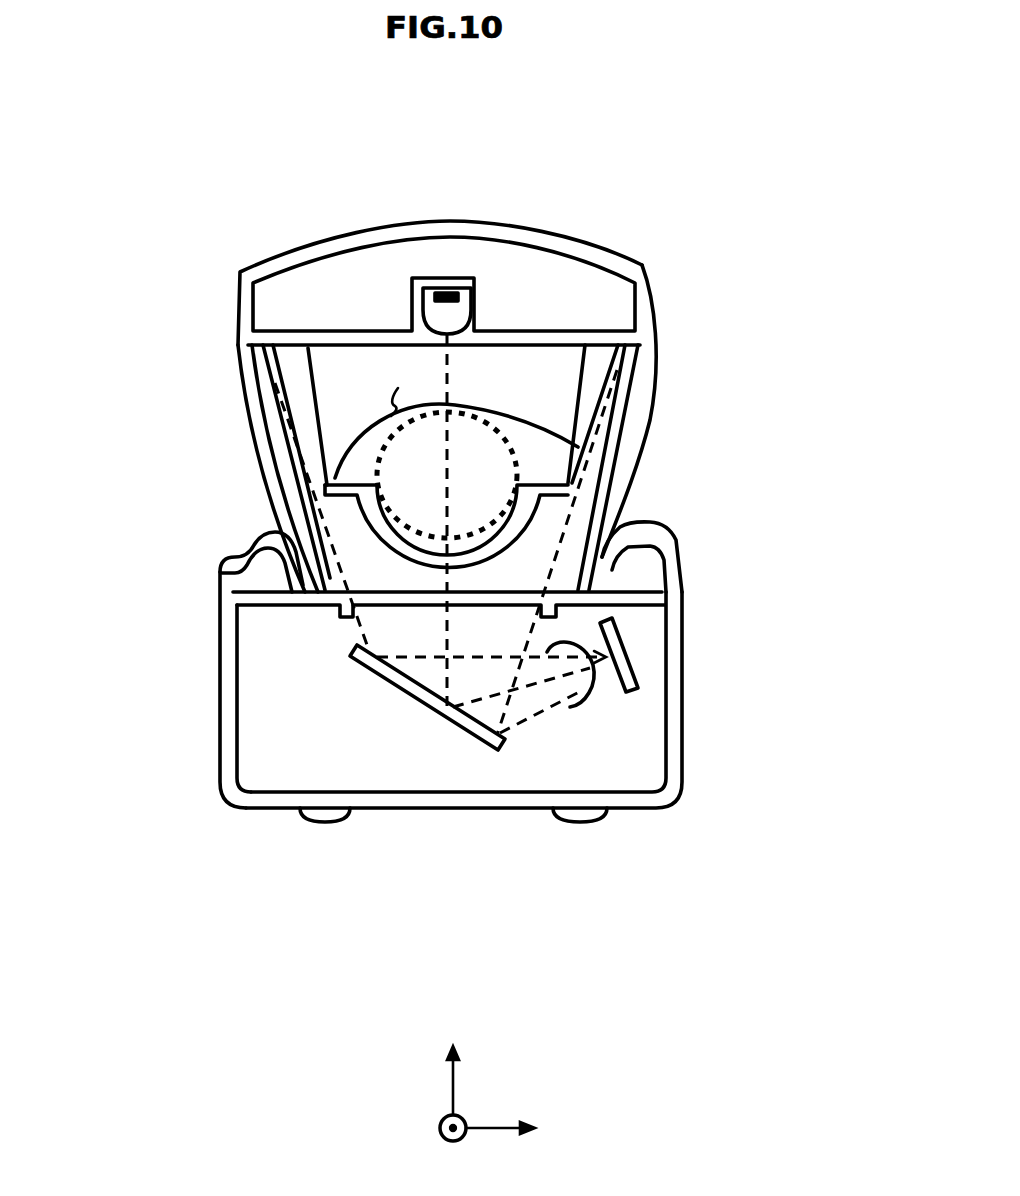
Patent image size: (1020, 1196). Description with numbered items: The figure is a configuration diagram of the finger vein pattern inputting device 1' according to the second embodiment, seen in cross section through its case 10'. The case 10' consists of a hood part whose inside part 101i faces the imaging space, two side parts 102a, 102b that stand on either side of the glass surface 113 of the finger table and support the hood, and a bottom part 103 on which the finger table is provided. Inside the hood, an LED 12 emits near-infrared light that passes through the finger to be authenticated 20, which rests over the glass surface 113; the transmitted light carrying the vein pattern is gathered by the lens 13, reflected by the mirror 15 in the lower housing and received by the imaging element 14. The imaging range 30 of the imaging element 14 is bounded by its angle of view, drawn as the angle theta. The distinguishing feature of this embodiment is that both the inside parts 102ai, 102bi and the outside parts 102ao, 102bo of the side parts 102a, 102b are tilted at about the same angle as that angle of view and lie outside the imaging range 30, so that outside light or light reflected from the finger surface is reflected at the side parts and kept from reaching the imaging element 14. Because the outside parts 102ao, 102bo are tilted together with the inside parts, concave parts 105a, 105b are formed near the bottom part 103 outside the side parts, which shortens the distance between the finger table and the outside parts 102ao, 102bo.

The finger vein pattern inputting device 1' is at (467, 641).
The case 10' is at (453, 491).
The LED 12 is at (436, 286).
The lens 13 is at (487, 418).
The finger to be authenticated 20 is at (506, 404).
The inside part of the hood part 101i is at (256, 352).
The side part 102a is at (640, 445).
The inside part of the side part 102ai is at (582, 383).
The outside part of the side part 102ao is at (633, 474).
The side part 102b is at (280, 508).
The inside part of the side part 102bi is at (262, 398).
The outside part of the side part 102bo is at (264, 460).
The bottom part 103 is at (220, 650).
The concave part 105a is at (644, 548).
The concave part 105b is at (225, 567).
The glass surface 113 is at (672, 530).
The imaging element 14 is at (617, 655).
The mirror 15 is at (383, 680).
The imaging range 30 is at (572, 707).